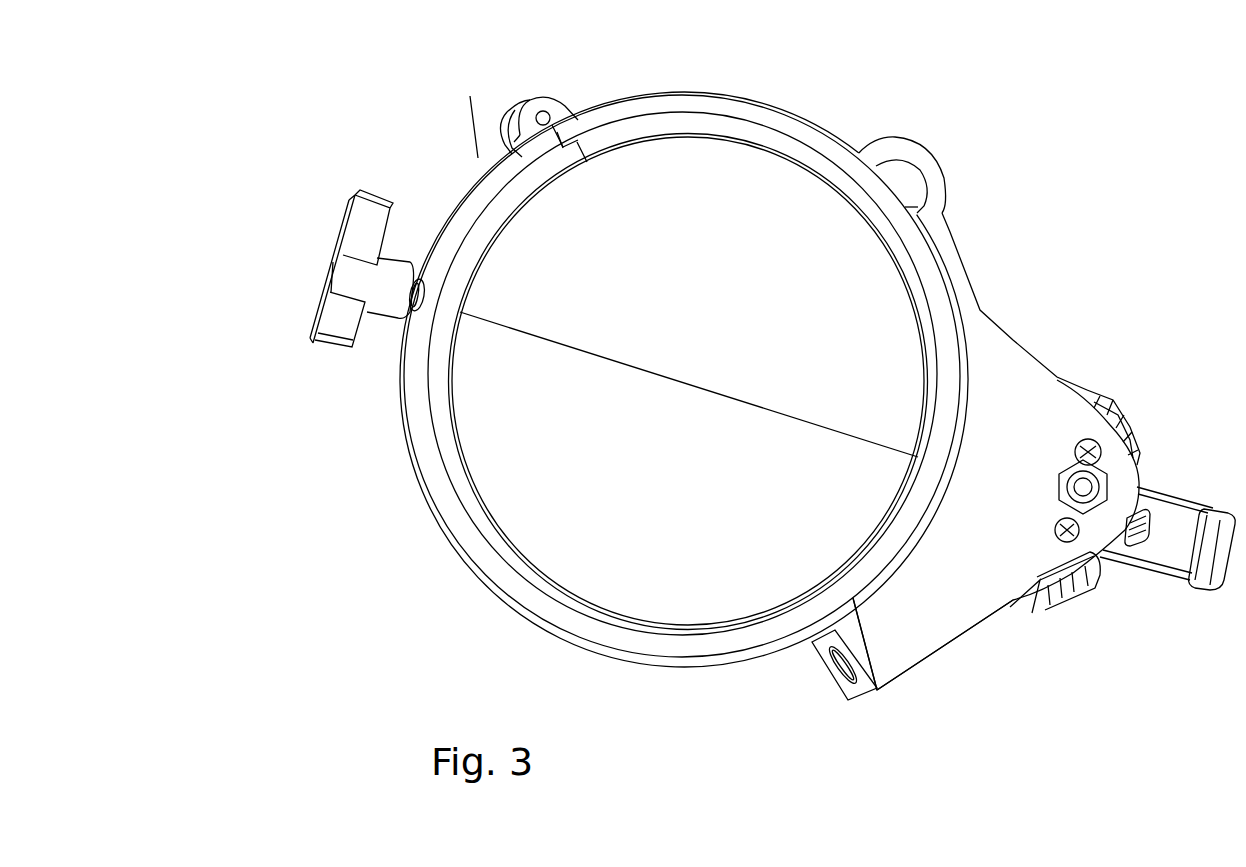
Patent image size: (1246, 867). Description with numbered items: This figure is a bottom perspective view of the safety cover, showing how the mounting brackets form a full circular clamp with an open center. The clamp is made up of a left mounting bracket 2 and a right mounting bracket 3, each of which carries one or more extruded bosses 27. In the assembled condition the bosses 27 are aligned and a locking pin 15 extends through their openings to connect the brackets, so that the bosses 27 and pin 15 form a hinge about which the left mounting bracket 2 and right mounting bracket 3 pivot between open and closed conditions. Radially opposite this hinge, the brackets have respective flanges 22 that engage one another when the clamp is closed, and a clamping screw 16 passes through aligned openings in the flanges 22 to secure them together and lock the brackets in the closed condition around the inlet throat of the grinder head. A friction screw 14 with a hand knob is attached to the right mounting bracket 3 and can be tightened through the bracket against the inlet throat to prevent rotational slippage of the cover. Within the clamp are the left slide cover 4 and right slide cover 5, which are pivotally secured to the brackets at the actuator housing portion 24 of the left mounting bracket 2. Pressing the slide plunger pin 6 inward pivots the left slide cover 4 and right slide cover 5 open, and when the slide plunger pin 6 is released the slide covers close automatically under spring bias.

The left mounting bracket 2 is at (1018, 375).
The right mounting bracket 3 is at (478, 579).
The left slide cover 4 is at (804, 200).
The right slide cover 5 is at (497, 470).
The slide plunger pin 6 is at (1178, 507).
The friction screw 14 is at (297, 221).
The locking pin 15 is at (525, 99).
The clamping screw 16 is at (804, 676).
The flanges 22 is at (880, 670).
The actuator housing portion 24 is at (1015, 658).
The extruded bosses 27 is at (579, 85).